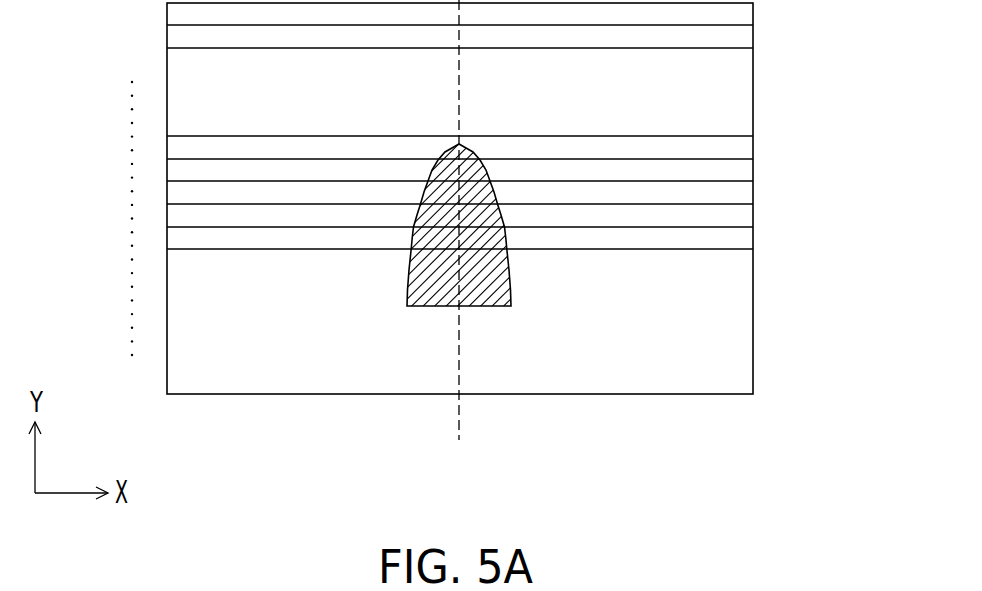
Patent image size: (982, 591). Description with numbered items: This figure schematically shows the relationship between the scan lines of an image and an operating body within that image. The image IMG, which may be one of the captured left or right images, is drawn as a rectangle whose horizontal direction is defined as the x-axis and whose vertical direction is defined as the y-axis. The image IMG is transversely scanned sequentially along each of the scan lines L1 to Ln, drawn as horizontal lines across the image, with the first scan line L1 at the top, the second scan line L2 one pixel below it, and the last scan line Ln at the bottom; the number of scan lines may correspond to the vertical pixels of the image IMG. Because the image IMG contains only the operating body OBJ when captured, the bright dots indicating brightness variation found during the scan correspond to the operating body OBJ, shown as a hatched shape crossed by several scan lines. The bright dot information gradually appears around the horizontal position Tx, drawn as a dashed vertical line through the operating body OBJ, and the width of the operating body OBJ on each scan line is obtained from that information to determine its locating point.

The scan line L1 is at (167, 26).
The scan line L2 is at (167, 49).
The scan line Ln is at (167, 386).
The operating body OBJ is at (503, 286).
The image IMG is at (639, 395).
The horizontal position Tx is at (459, 239).